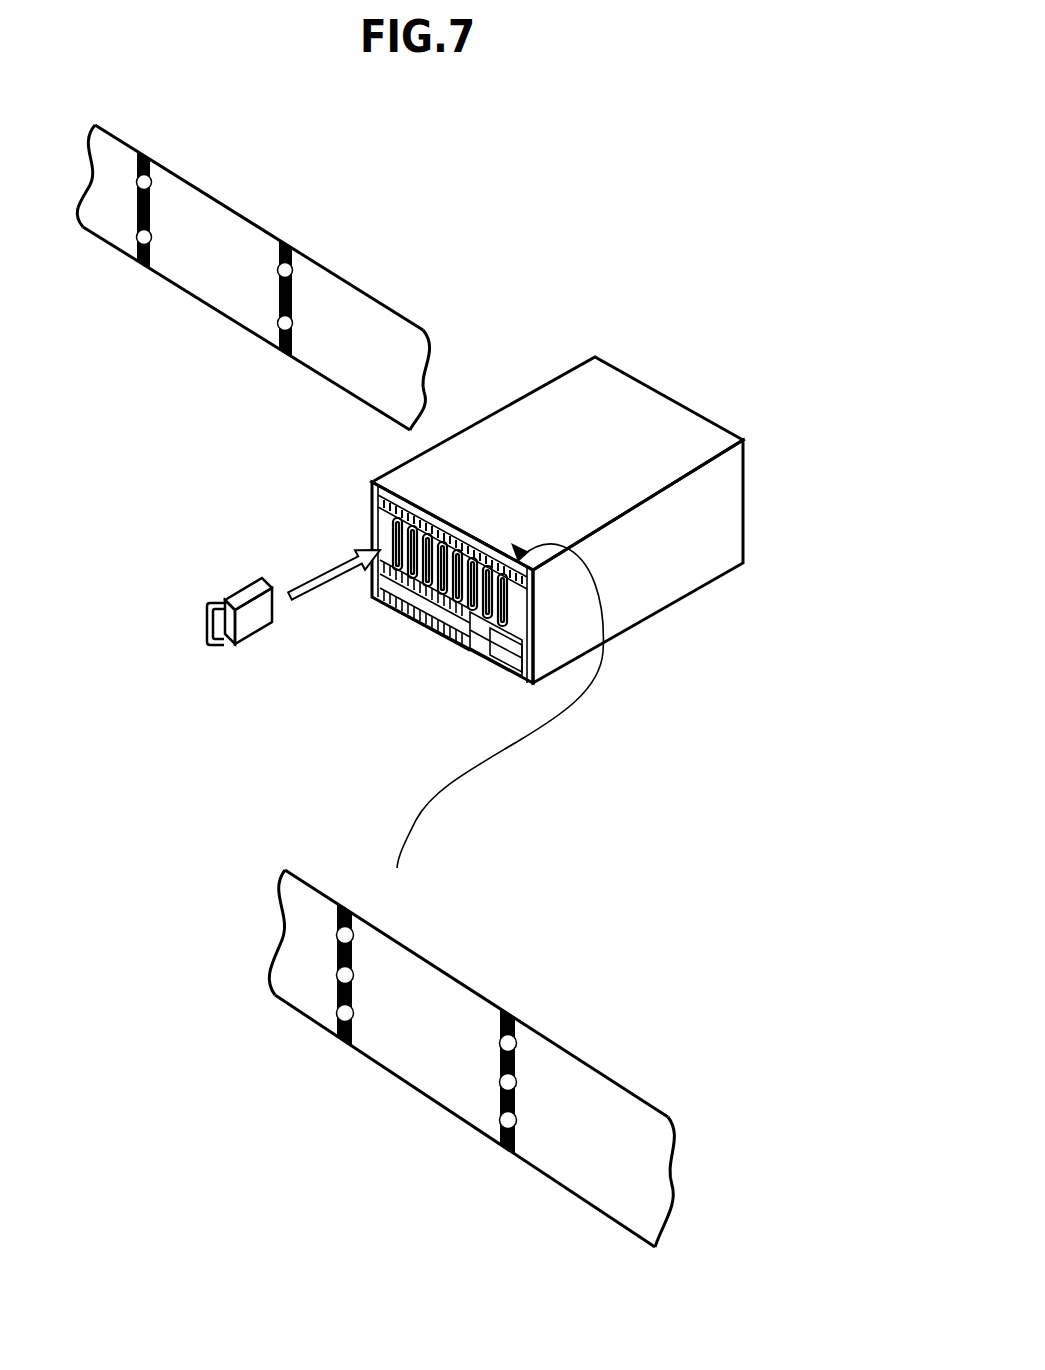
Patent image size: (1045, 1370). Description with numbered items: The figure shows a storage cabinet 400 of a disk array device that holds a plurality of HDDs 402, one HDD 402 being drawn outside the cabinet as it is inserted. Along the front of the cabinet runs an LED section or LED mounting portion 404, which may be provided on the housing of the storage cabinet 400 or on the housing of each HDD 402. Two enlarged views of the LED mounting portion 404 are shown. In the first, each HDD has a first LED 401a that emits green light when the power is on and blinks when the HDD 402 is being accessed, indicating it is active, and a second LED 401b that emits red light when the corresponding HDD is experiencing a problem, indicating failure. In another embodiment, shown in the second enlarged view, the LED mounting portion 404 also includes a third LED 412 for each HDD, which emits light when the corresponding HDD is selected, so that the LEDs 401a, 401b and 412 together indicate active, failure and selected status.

The storage cabinet 400 is at (638, 378).
The HDD 402 is at (198, 630).
The LED mounting portion 404 is at (263, 252).
The first LED 401a is at (293, 268).
The second LED 401b is at (280, 328).
The third LED 412 is at (335, 980).